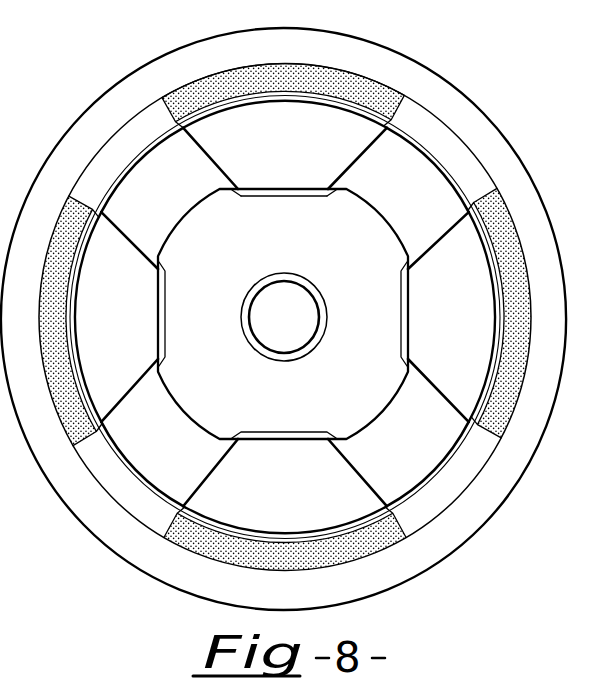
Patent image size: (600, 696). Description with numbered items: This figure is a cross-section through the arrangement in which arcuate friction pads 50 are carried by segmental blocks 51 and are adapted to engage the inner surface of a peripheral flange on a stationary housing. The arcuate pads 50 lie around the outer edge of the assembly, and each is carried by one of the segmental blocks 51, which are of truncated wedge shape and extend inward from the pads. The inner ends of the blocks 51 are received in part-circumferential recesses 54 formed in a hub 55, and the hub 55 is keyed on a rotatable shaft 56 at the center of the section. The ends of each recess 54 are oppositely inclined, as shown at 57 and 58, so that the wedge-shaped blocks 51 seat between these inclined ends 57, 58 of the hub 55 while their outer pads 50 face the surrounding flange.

The arcuate friction pads 50 is at (335, 83).
The segmental blocks 51 is at (327, 153).
The part-circumferential recesses 54 is at (290, 199).
The hub 55 is at (372, 250).
The rotatable shaft 56 is at (303, 333).
The inclined recess end 57 is at (231, 194).
The inclined recess end 58 is at (334, 194).